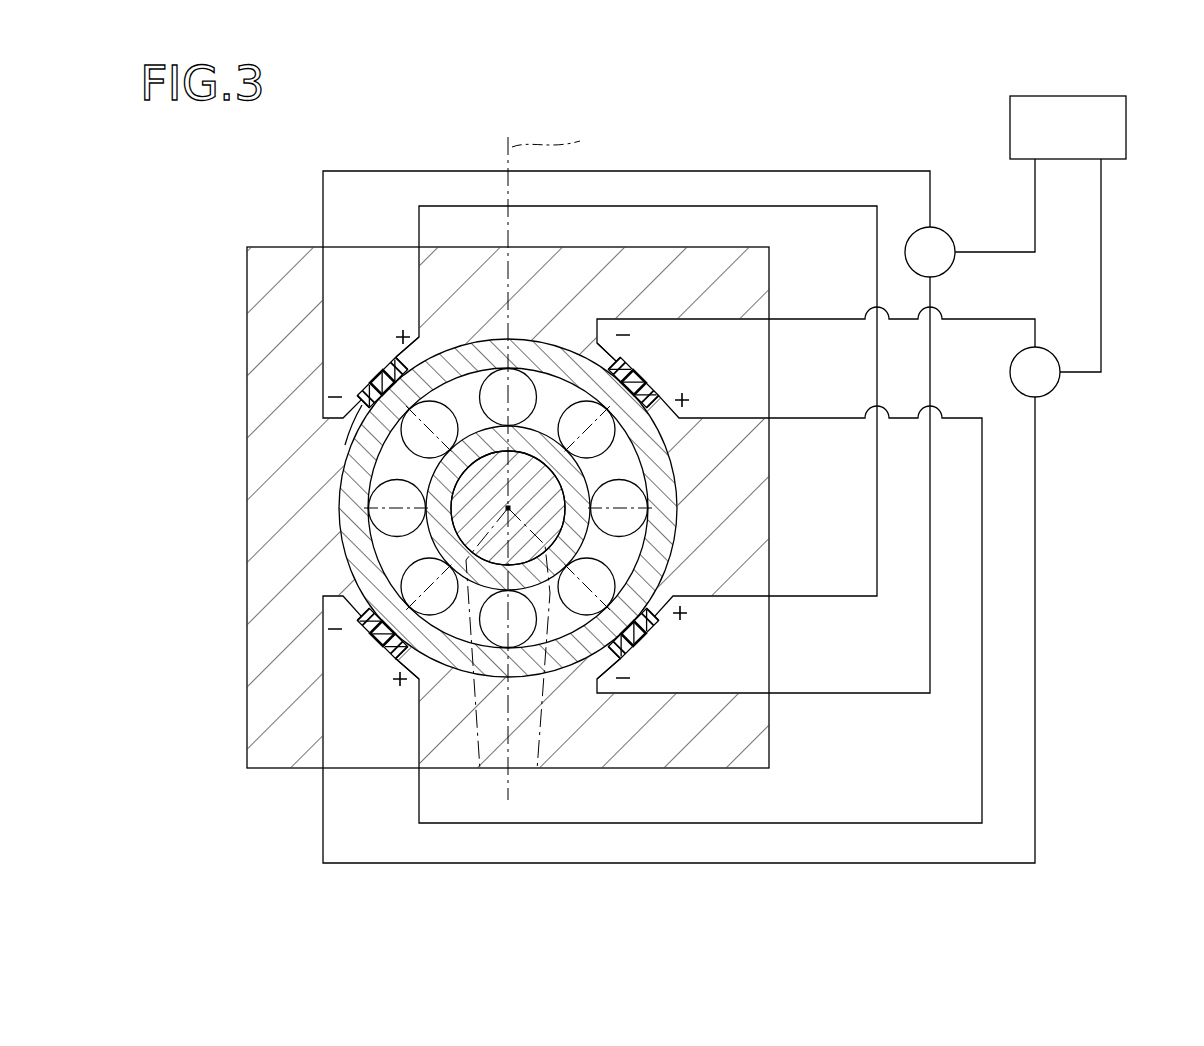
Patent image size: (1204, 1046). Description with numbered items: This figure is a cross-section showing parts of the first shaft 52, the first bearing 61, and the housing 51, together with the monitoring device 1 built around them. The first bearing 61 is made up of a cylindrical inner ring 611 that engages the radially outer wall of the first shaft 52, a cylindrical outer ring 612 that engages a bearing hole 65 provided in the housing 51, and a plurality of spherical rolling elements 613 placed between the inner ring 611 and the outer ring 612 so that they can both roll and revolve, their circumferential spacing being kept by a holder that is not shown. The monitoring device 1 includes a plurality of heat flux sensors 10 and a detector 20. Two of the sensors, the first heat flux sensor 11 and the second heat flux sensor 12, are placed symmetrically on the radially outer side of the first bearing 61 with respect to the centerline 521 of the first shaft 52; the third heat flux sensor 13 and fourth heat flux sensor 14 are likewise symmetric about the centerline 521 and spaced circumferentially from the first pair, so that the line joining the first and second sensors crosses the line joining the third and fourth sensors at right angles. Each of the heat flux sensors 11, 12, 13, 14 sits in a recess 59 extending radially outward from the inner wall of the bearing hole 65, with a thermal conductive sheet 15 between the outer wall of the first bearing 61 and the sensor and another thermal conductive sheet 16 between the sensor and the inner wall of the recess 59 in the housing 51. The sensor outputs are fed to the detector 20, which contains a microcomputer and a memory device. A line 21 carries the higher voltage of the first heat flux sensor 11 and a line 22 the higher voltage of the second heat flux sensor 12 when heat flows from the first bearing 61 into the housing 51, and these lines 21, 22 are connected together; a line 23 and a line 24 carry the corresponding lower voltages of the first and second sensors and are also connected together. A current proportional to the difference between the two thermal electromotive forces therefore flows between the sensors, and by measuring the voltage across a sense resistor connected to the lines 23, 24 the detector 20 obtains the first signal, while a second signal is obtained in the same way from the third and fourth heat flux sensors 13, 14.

The monitoring device 1 is at (896, 127).
The heat flux sensor 10 is at (602, 515).
The first heat flux sensor 11 is at (380, 375).
The second heat flux sensor 12 is at (647, 657).
The third heat flux sensor 13 is at (662, 385).
The fourth heat flux sensor 14 is at (385, 655).
The thermal conductive sheet 15 is at (447, 355).
The thermal conductive sheet 16 is at (387, 365).
The recess 59 is at (357, 382).
The detector 20 is at (1126, 125).
The line 21 is at (695, 206).
The line 22 is at (802, 596).
The line 23 is at (695, 171).
The line 24 is at (782, 693).
The housing 51 is at (277, 373).
The first shaft 52 is at (640, 508).
The centerline 521 is at (560, 540).
The first bearing 61 is at (180, 470).
The inner ring 611 is at (377, 467).
The outer ring 612 is at (350, 503).
The rolling element 613 is at (343, 538).
The bearing hole 65 is at (347, 450).